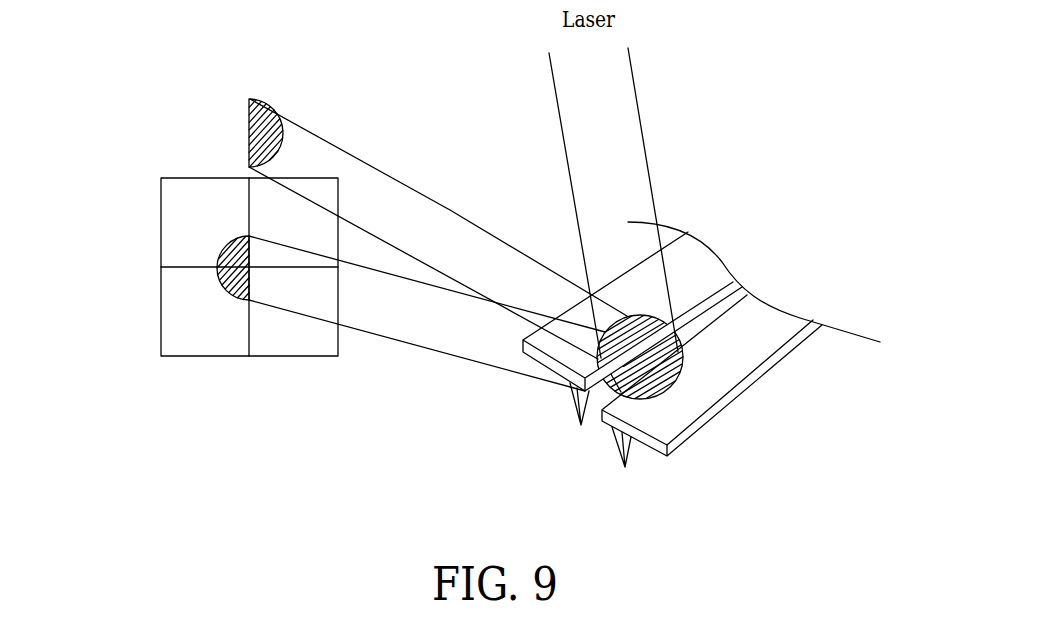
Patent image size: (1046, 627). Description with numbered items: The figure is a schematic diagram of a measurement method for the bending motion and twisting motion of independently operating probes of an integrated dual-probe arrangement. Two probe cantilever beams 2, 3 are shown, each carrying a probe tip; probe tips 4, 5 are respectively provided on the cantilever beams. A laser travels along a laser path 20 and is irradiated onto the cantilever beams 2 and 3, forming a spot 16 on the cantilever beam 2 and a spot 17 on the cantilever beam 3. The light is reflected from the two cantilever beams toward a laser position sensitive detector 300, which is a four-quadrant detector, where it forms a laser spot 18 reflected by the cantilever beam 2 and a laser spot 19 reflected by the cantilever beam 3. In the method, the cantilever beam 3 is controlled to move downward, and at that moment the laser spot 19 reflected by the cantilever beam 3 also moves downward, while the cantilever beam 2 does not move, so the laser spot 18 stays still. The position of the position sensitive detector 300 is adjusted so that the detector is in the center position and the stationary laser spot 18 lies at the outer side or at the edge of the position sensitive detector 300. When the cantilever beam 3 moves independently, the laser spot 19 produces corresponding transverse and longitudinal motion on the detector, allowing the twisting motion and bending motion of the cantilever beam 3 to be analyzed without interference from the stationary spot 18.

The laser position sensitive detector 300 is at (134, 200).
The laser spot 18 is at (263, 123).
The laser spot 19 is at (217, 277).
The laser path 20 is at (578, 98).
The spot 16 is at (620, 316).
The probe cantilever beam 2 is at (693, 272).
The probe cantilever beam 3 is at (743, 353).
The spot 17 is at (680, 392).
The probe tip 4 is at (571, 404).
The probe tip 5 is at (628, 448).